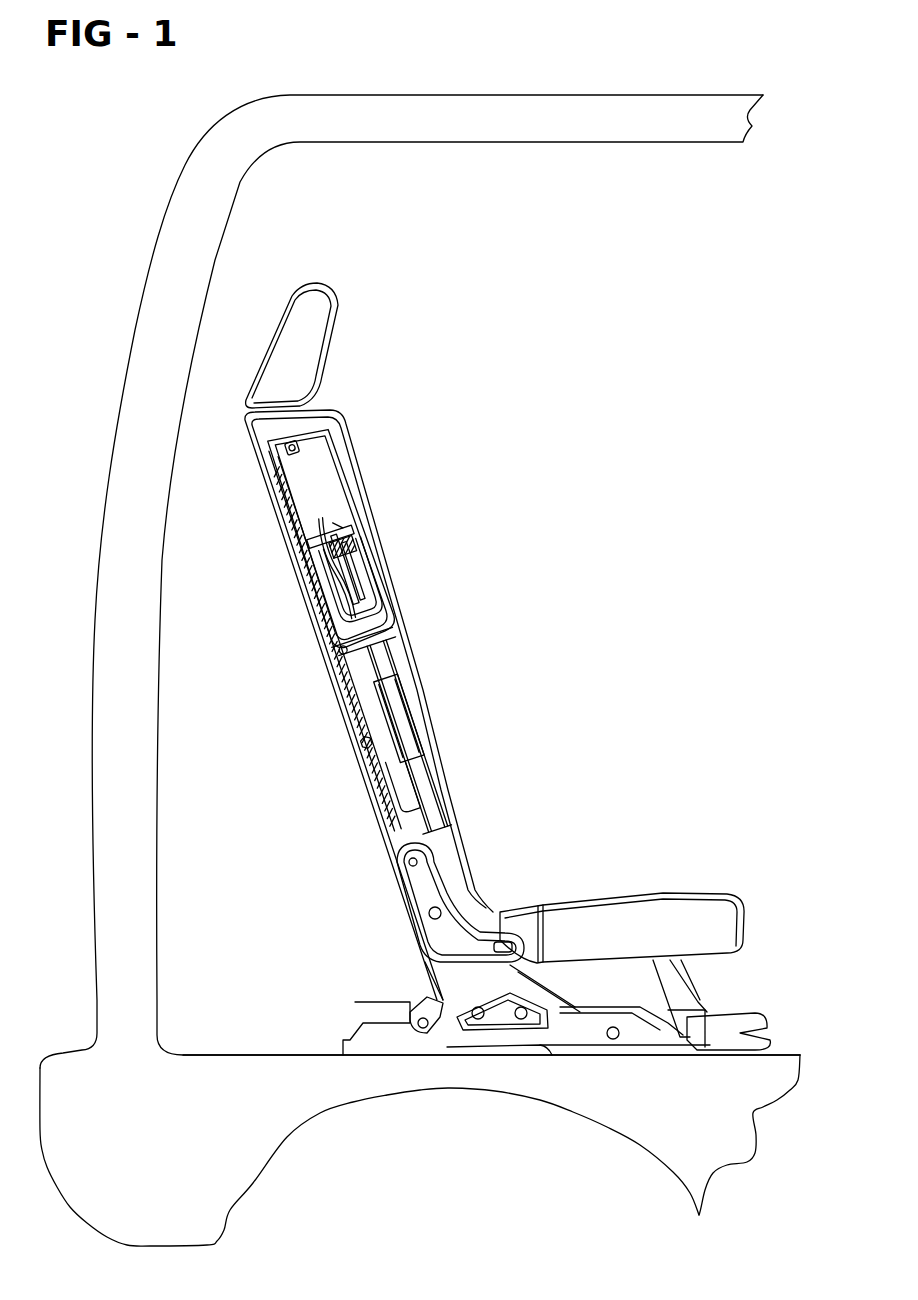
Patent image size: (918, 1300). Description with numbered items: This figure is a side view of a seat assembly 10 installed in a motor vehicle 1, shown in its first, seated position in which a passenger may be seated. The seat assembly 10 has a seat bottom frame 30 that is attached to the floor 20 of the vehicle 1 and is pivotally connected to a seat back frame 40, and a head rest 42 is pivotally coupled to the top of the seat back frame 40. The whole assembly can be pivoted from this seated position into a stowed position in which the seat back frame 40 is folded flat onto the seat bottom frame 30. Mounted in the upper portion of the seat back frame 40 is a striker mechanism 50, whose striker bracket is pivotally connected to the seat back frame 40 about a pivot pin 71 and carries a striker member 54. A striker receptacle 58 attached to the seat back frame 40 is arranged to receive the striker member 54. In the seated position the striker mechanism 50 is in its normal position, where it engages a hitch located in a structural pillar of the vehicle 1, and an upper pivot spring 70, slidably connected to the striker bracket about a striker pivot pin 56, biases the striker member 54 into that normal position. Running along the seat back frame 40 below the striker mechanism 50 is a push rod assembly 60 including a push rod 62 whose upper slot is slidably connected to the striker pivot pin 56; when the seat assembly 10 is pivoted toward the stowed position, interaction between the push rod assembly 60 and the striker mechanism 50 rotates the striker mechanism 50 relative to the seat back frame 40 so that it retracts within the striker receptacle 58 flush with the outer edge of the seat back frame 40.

The motor vehicle 1 is at (384, 95).
The seat assembly 10 is at (476, 653).
The floor 20 is at (231, 1055).
The seat bottom frame 30 is at (614, 892).
The seat back frame 40 is at (430, 711).
The head rest 42 is at (320, 375).
The striker mechanism 50 is at (348, 568).
The striker member 54 is at (338, 525).
The striker pivot pin 56 is at (351, 579).
The striker receptacle 58 is at (332, 536).
The push rod assembly 60 is at (392, 741).
The push rod 62 is at (364, 642).
The upper pivot spring 70 is at (335, 568).
The pivot pin 71 is at (330, 536).